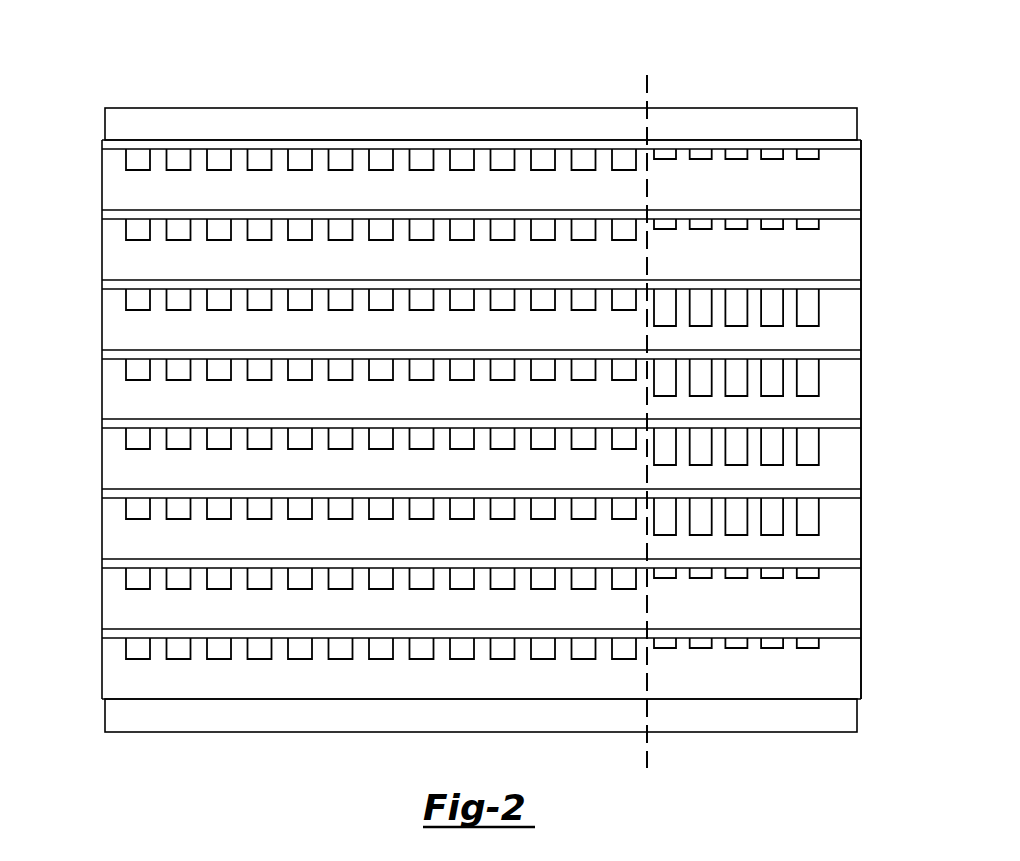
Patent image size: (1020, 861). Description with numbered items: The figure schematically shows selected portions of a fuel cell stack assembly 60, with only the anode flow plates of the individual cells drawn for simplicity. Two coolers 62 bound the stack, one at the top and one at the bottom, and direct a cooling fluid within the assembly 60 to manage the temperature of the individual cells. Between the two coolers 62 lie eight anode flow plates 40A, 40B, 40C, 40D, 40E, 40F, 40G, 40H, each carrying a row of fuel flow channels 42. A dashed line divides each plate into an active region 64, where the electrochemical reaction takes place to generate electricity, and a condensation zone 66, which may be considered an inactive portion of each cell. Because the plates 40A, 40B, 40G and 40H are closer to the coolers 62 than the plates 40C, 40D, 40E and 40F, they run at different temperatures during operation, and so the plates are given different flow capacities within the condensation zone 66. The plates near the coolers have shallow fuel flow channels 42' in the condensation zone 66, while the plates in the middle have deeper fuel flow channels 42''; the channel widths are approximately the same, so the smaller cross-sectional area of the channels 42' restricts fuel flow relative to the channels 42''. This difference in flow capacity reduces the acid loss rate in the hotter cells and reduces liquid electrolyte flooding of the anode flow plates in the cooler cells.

The fuel cell stack assembly 60 is at (104, 44).
The cooler 62 is at (840, 125).
The active region 64 is at (448, 84).
The condensation zone 66 is at (776, 84).
The anode flow plate 40A is at (124, 185).
The anode flow plate 40B is at (124, 256).
The anode flow plate 40C is at (124, 326).
The anode flow plate 40D is at (124, 396).
The anode flow plate 40E is at (124, 465).
The anode flow plate 40F is at (124, 535).
The anode flow plate 40G is at (124, 605).
The anode flow plate 40H is at (124, 675).
The fuel flow channel 42 is at (381, 356).
The fuel flow channel 42' is at (736, 346).
The fuel flow channel 42'' is at (793, 411).